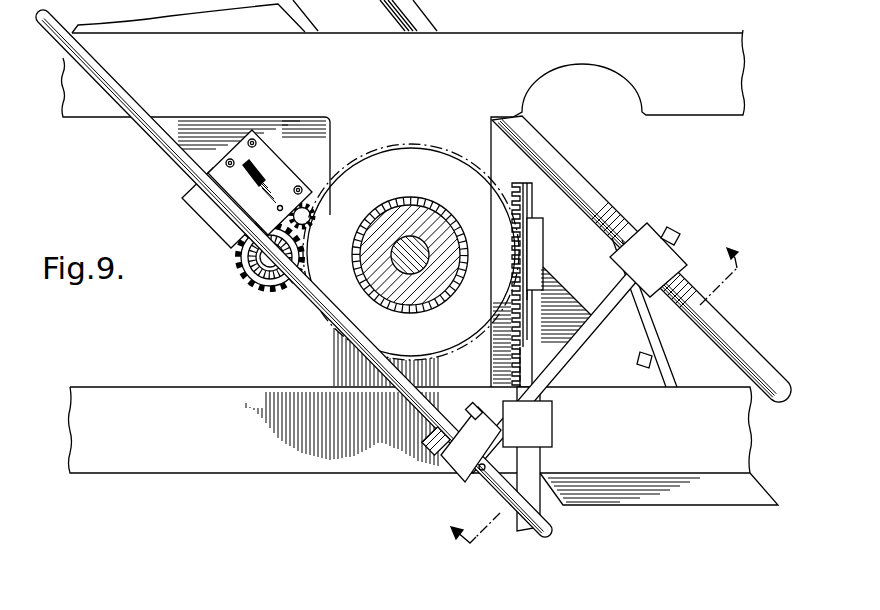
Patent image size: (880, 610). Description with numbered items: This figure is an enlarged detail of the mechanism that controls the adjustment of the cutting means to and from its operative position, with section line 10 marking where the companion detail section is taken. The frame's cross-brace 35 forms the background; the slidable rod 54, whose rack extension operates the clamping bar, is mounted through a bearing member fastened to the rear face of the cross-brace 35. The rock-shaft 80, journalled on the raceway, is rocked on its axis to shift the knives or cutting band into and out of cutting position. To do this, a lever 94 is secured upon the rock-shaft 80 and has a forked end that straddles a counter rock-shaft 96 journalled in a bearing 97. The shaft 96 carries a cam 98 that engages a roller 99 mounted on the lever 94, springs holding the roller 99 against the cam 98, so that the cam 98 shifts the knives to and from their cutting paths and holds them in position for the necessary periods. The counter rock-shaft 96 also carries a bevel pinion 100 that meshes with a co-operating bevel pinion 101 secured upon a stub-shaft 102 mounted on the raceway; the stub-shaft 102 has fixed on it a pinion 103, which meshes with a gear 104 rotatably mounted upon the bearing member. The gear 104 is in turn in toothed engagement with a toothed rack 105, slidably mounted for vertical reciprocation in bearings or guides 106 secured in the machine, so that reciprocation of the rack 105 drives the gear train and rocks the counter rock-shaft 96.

The section line 10— 10 is at (611, 405).
The cross-brace 35 is at (143, 466).
The slidable rod 54 is at (417, 247).
The rock-shaft 80 is at (570, 163).
The lever 94 is at (567, 348).
The counter rock-shaft 96 is at (527, 533).
The bearing 97 is at (213, 212).
The cam 98 is at (440, 458).
The roller 99 is at (472, 406).
The bevel pinion 100 is at (238, 253).
The bevel pinion 101 is at (263, 285).
The stub-shaft 102 is at (277, 290).
The pinion 103 is at (306, 233).
The gear 104 is at (392, 157).
The toothed rack 105 is at (533, 202).
The bearings or guides 106 is at (540, 428).